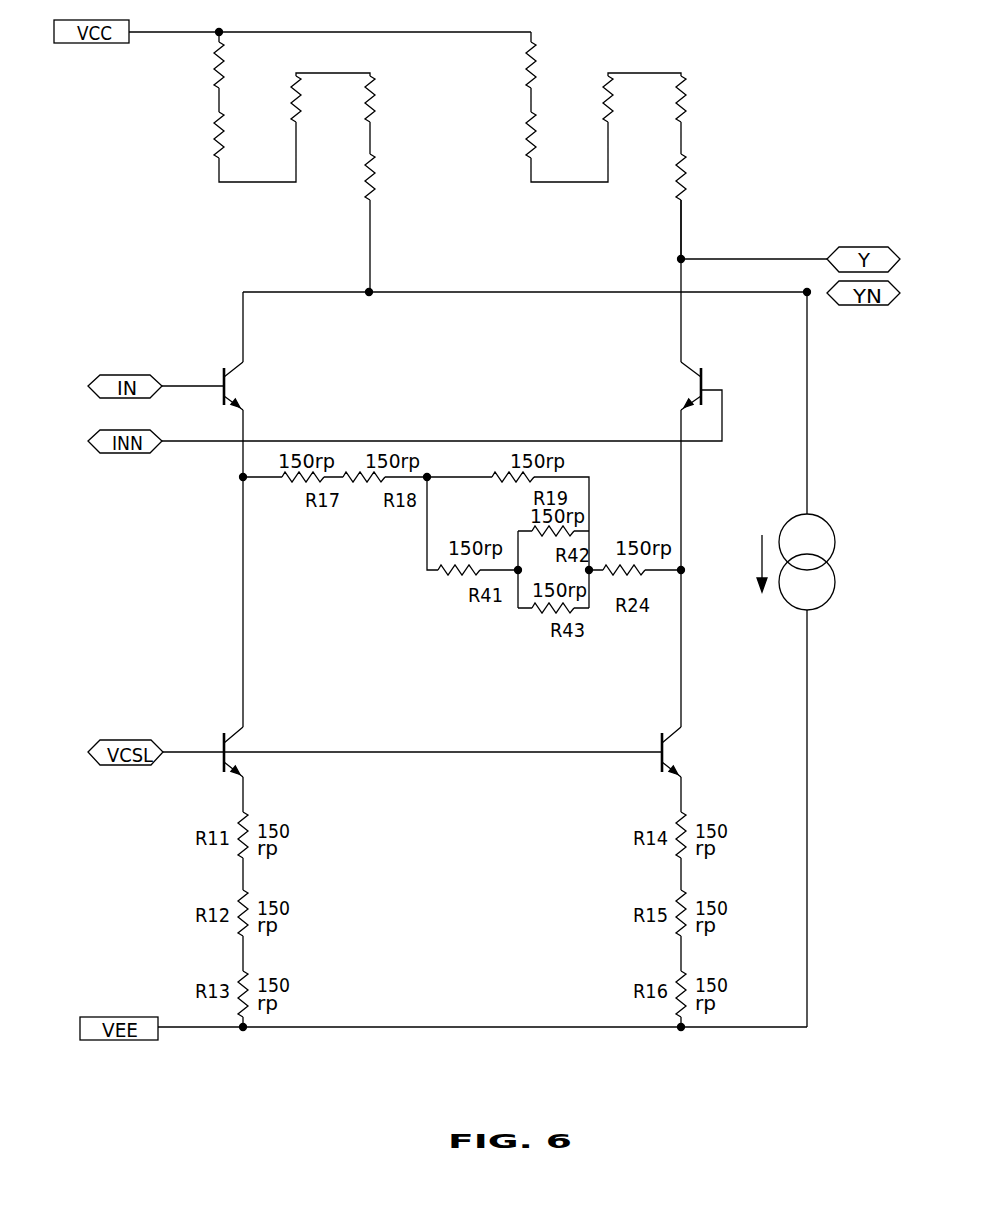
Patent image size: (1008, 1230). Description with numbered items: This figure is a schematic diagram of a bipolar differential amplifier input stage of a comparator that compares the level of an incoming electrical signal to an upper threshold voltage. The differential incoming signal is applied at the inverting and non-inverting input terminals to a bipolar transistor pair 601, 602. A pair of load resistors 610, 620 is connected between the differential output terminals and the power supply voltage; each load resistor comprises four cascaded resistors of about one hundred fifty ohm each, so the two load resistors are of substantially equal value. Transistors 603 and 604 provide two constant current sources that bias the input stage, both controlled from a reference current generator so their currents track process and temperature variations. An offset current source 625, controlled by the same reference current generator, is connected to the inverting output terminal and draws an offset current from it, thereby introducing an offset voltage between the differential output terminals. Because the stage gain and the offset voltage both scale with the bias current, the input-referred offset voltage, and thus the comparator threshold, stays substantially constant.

The bipolar transistor 601 is at (262, 375).
The bipolar transistor 602 is at (667, 377).
The current source transistor 603 is at (257, 732).
The current source transistor 604 is at (660, 733).
The load resistor 610 is at (168, 135).
The load resistor 620 is at (703, 110).
The offset current source 625 is at (837, 597).